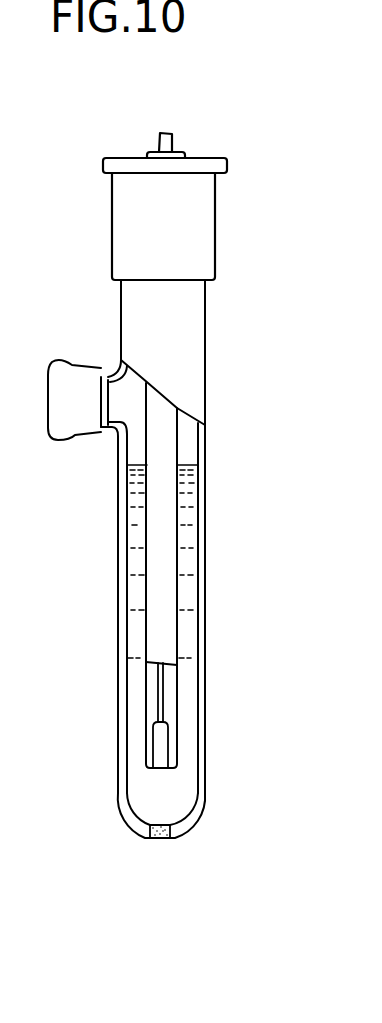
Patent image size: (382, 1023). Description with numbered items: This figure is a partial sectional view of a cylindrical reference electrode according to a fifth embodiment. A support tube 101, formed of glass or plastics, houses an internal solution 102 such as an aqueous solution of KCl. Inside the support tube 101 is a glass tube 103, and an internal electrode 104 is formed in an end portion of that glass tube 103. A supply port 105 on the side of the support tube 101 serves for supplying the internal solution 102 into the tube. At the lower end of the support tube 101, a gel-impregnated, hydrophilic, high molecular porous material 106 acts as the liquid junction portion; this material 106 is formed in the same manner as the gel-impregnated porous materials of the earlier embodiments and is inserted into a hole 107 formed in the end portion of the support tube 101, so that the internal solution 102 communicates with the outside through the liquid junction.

The support tube 101 is at (200, 493).
The internal solution 102 is at (177, 649).
The glass tube 103 is at (167, 650).
The internal electrode 104 is at (165, 748).
The supply port 105 is at (108, 412).
The gel-impregnated, hydrophilic, high molecular porous material 106 is at (155, 840).
The hole 107 is at (165, 822).